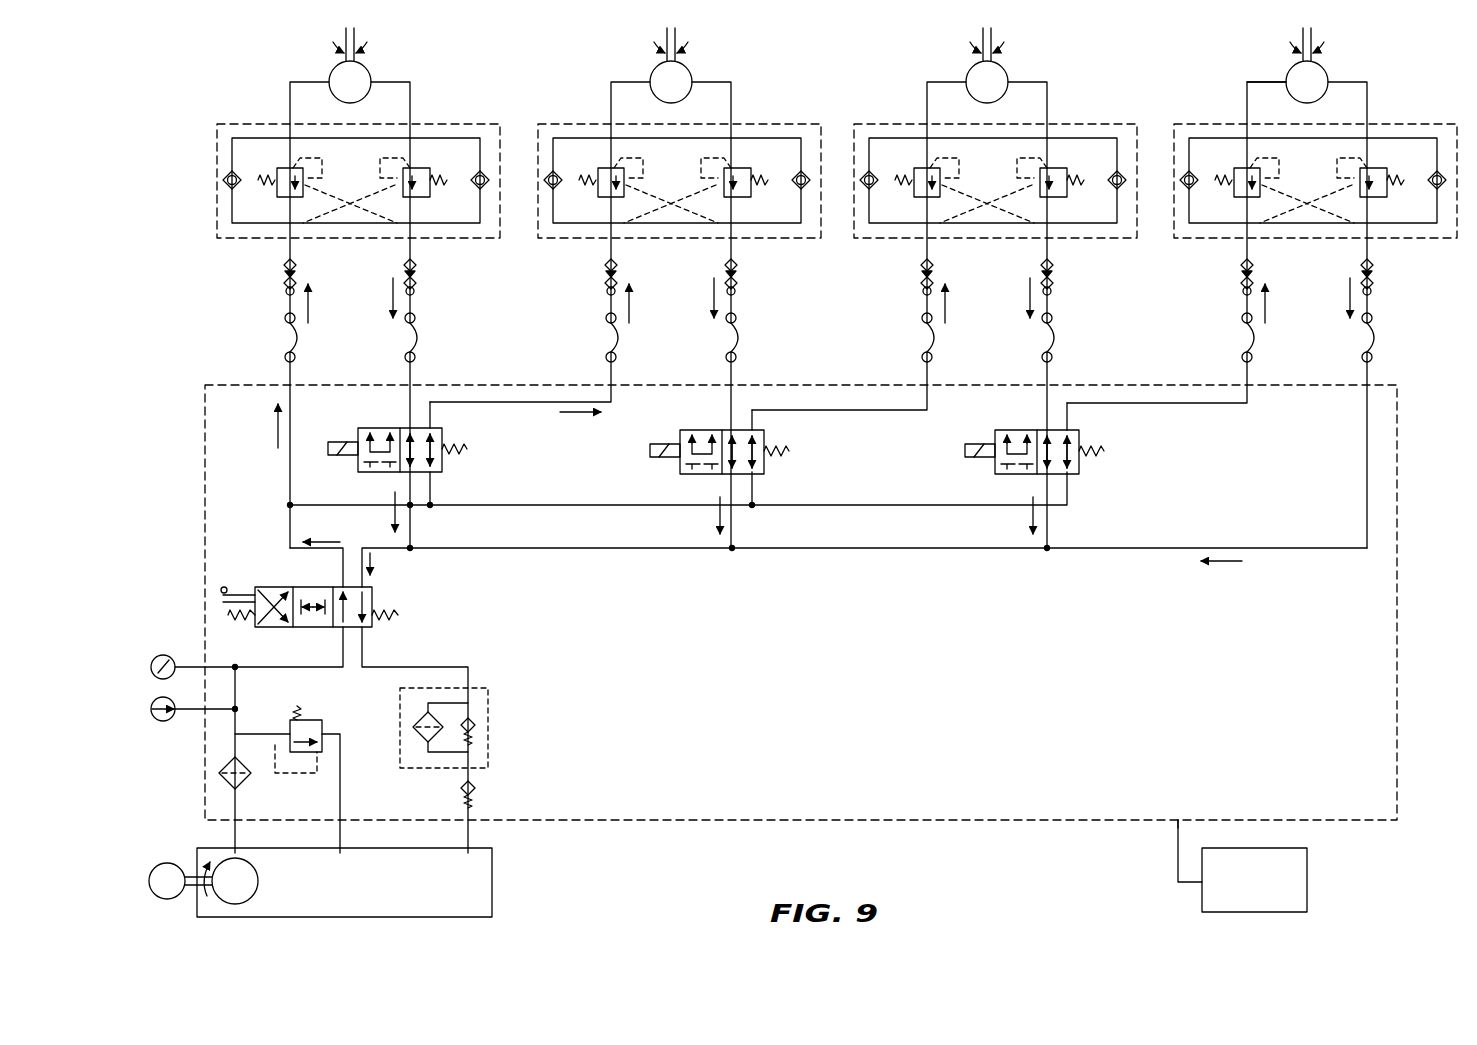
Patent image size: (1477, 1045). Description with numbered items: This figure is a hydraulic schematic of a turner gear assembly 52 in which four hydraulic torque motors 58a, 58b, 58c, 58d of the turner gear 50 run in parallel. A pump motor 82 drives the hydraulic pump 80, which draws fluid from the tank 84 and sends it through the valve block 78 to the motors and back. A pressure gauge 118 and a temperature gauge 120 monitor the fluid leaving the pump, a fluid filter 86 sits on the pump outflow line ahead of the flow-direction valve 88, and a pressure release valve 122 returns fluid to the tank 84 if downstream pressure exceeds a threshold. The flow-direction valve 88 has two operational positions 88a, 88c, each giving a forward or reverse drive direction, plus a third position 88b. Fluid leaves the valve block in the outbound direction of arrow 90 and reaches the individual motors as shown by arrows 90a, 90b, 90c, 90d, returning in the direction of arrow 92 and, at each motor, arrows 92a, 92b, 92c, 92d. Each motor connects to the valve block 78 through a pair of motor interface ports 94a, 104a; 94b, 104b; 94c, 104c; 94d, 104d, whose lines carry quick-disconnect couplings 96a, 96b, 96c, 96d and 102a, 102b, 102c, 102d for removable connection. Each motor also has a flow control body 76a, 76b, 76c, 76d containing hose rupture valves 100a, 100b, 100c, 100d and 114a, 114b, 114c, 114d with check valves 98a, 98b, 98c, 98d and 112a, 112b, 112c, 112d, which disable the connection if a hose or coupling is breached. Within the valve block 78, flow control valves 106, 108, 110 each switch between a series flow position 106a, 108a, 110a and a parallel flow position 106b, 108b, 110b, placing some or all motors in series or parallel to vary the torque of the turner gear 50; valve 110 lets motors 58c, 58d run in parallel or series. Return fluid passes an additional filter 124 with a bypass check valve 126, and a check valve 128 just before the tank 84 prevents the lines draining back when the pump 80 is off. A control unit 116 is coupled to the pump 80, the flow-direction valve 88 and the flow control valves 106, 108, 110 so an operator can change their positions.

The turner gear 50 is at (1343, 59).
The turner gear assembly 52 is at (1400, 846).
The torque motor 58a is at (366, 68).
The torque motor 58b is at (703, 65).
The torque motor 58c is at (1018, 65).
The torque motor 58d is at (1340, 65).
The flow control body 76a is at (262, 124).
The flow control body 76b is at (679, 143).
The flow control body 76c is at (995, 143).
The flow control body 76d is at (1315, 143).
The valve block 78 is at (205, 432).
The hydraulic pump 80 is at (258, 881).
The pump motor 82 is at (149, 880).
The hydraulic fluid tank 84 is at (421, 898).
The fluid filter 86 is at (219, 773).
The flow-direction valve 88 is at (280, 587).
The operational position of flow-direction valve 88a is at (265, 627).
The third position of flow-direction valve 88b is at (306, 627).
The first direction fluid flow position 88c is at (360, 627).
The outbound first fluid flow direction 90 is at (278, 430).
The fluid flow toward first motor 90a is at (308, 318).
The fluid flow toward second motor 90b is at (660, 316).
The fluid flow toward third motor 90c is at (975, 316).
The fluid flow toward fourth motor 90d is at (1297, 316).
The return fluid flow direction 92 is at (400, 515).
The return fluid flow from first motor 92a is at (393, 290).
The return fluid flow from second motor 92b is at (687, 289).
The return fluid flow from third motor 92c is at (1003, 289).
The return fluid flow from fourth motor 92d is at (1323, 289).
The motor interface port 94a is at (285, 339).
The motor interface port 94b is at (582, 337).
The motor interface port 94c is at (898, 337).
The motor interface port 94d is at (1218, 337).
The quick-disconnect coupling 96a is at (284, 281).
The quick-disconnect coupling 96b is at (576, 278).
The quick-disconnect coupling 96c is at (892, 278).
The quick-disconnect coupling 96d is at (1212, 278).
The check valve 98a is at (232, 178).
The check valve 98b is at (565, 138).
The check valve 98c is at (880, 138).
The check valve 98d is at (1201, 138).
The hose rupture valve 100a is at (445, 152).
The hose rupture valve 100b is at (734, 150).
The hose rupture valve 100c is at (1049, 150).
The hose rupture valve 100d is at (1368, 150).
The quick-disconnect coupling 102a is at (418, 280).
The quick-disconnect coupling 102b is at (773, 277).
The quick-disconnect coupling 102c is at (1088, 277).
The quick-disconnect coupling 102d is at (1410, 277).
The motor interface port 104a is at (418, 339).
The motor interface port 104b is at (775, 337).
The motor interface port 104c is at (1090, 337).
The motor interface port 104d is at (1411, 337).
The flow control valve 106 is at (373, 428).
The series flow position 106a is at (373, 472).
The parallel flow position 106b is at (432, 472).
The flow control valve 108 is at (695, 430).
The series flow position 108a is at (695, 474).
The parallel flow position 108b is at (753, 474).
The flow control valve 110 is at (1011, 430).
The series flow position 110a is at (1010, 474).
The parallel flow position 110b is at (1069, 474).
The check valve 112a is at (483, 178).
The check valve 112b is at (844, 118).
The check valve 112c is at (1159, 118).
The check valve 112d is at (1435, 246).
The hose rupture valve 114a is at (261, 205).
The hose rupture valve 114b is at (606, 214).
The hose rupture valve 114c is at (922, 214).
The hose rupture valve 114d is at (1242, 217).
The control unit 116 is at (1307, 882).
The pressure gauge 118 is at (151, 667).
The temperature gauge 120 is at (151, 709).
The pressure release valve 122 is at (320, 712).
The fluid filter 124 is at (418, 744).
The bypass check valve 126 is at (488, 712).
The check valve 128 is at (480, 793).